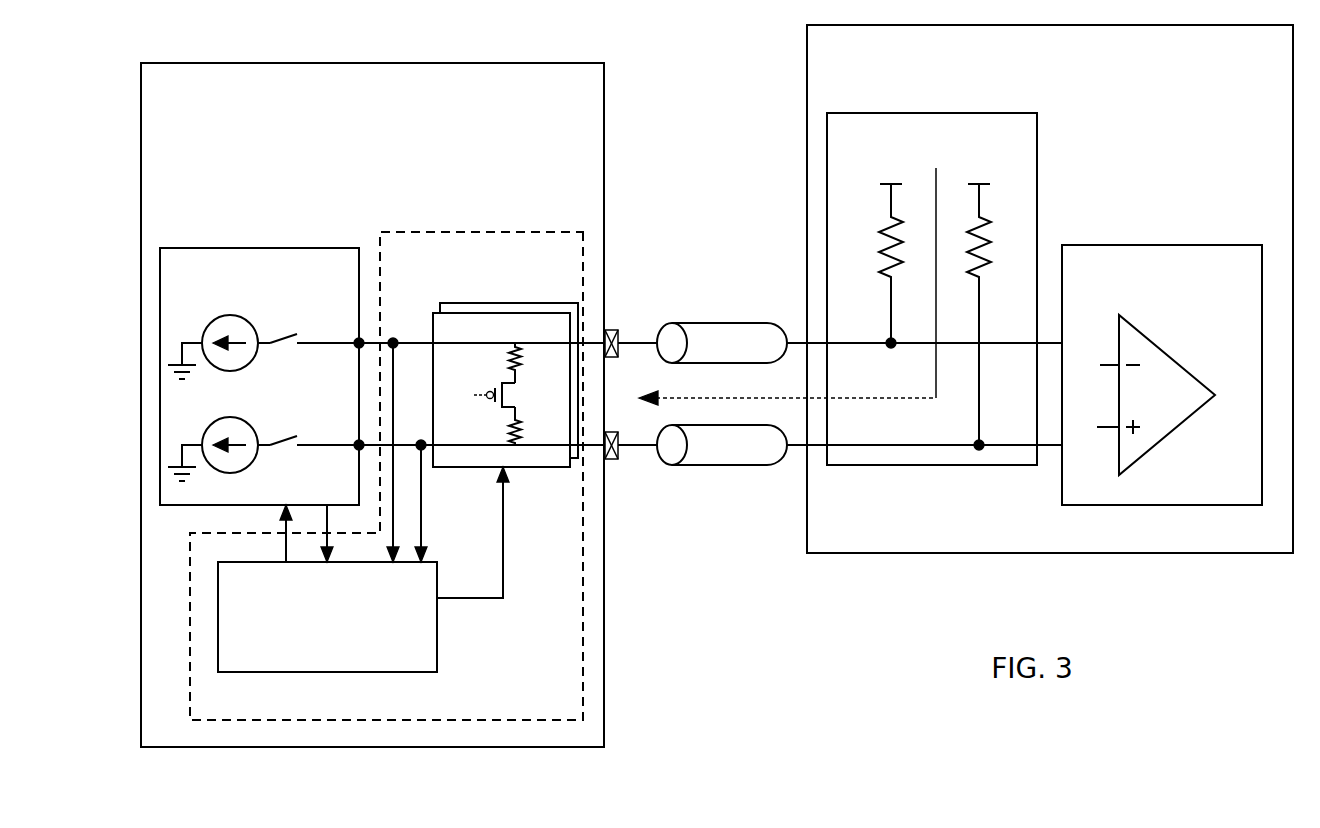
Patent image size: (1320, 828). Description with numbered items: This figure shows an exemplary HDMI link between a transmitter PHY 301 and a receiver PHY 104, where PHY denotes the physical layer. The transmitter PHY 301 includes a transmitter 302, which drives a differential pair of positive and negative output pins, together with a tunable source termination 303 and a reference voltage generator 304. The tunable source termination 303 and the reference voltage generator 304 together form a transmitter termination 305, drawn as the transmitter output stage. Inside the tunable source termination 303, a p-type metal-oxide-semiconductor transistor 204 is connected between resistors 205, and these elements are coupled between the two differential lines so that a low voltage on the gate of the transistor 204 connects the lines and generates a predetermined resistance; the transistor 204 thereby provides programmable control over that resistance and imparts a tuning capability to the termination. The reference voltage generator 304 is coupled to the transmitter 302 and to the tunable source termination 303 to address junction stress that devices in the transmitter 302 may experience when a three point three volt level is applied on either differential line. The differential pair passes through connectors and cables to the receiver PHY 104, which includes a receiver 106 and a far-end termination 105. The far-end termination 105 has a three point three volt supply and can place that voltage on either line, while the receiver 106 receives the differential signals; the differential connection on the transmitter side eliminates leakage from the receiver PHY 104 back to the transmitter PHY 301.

The transmitter PHY 301 is at (379, 405).
The transmitter 302 is at (262, 348).
The tunable source termination 303 is at (482, 358).
The reference voltage generator 304 is at (363, 507).
The transmitter termination 305 is at (397, 476).
The PMOS transistor 204 is at (485, 389).
The resistors 205 is at (535, 394).
The receiver PHY 104 is at (1050, 289).
The far-end termination 105 is at (932, 258).
The receiver 106 is at (1162, 355).